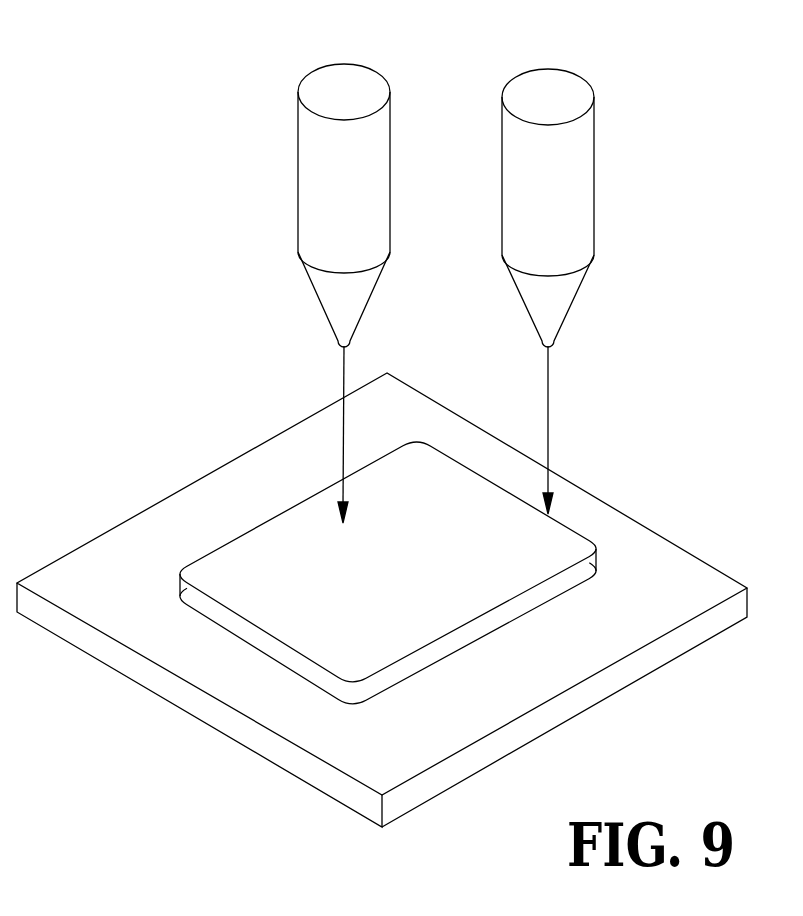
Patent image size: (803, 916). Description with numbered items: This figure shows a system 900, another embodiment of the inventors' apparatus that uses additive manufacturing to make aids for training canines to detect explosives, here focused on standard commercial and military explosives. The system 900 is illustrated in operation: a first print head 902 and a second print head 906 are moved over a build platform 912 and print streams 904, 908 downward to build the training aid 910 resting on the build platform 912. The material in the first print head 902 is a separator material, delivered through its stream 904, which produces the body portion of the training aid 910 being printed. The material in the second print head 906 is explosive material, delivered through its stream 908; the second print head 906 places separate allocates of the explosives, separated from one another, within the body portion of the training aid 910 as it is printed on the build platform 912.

The system 900 is at (629, 54).
The first print head 902 is at (327, 199).
The stream 904 is at (343, 375).
The second print head 906 is at (572, 213).
The stream 908 is at (552, 397).
The training aid 910 is at (445, 562).
The build platform 912 is at (455, 740).